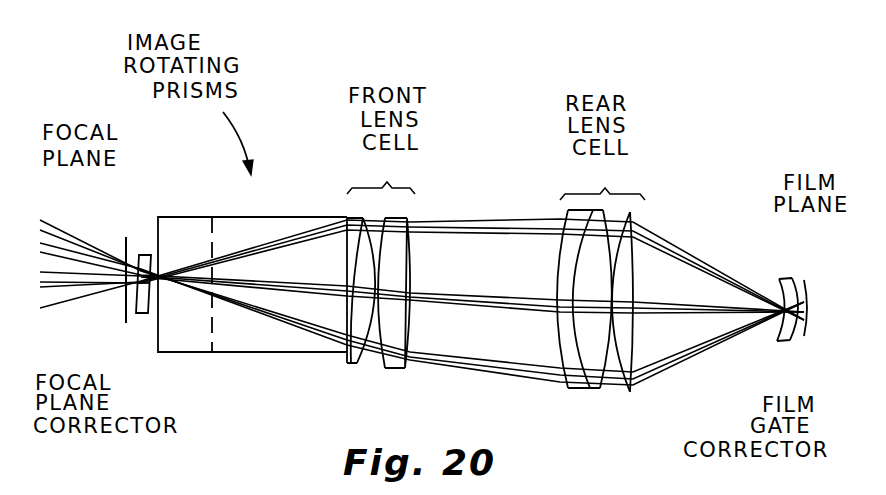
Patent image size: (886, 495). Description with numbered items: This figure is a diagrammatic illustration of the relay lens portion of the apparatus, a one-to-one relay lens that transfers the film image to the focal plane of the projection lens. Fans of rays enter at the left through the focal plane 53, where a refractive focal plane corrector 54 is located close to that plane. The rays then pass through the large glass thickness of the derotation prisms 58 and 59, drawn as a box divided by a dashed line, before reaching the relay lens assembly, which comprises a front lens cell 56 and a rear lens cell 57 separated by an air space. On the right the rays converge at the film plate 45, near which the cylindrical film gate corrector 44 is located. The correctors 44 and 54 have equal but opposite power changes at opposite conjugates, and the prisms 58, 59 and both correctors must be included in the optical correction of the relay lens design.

The film gate corrector 44 is at (779, 342).
The film plate 45 is at (805, 283).
The focal plane 53 is at (126, 237).
The focal plane corrector 54 is at (144, 314).
The front lens cell 56 is at (387, 179).
The rear lens cell 57 is at (605, 183).
The derotation prism 58 is at (265, 217).
The derotation prism 59 is at (183, 217).